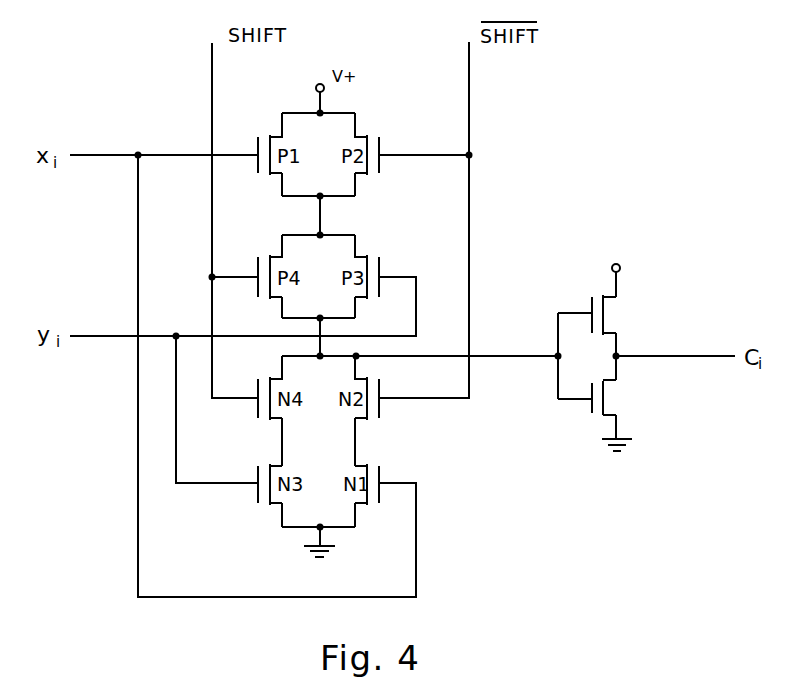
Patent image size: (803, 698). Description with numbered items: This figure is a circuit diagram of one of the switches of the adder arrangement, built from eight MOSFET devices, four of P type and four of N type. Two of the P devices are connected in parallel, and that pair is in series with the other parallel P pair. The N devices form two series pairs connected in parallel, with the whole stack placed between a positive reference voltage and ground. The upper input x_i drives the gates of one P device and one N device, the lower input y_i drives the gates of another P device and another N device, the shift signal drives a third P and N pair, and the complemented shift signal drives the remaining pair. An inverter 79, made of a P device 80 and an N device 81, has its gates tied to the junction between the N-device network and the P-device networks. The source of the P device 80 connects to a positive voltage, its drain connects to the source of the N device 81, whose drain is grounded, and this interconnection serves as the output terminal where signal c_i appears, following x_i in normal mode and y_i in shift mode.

The inverter 79 is at (548, 326).
The P device 80 is at (623, 306).
The N device 81 is at (621, 397).